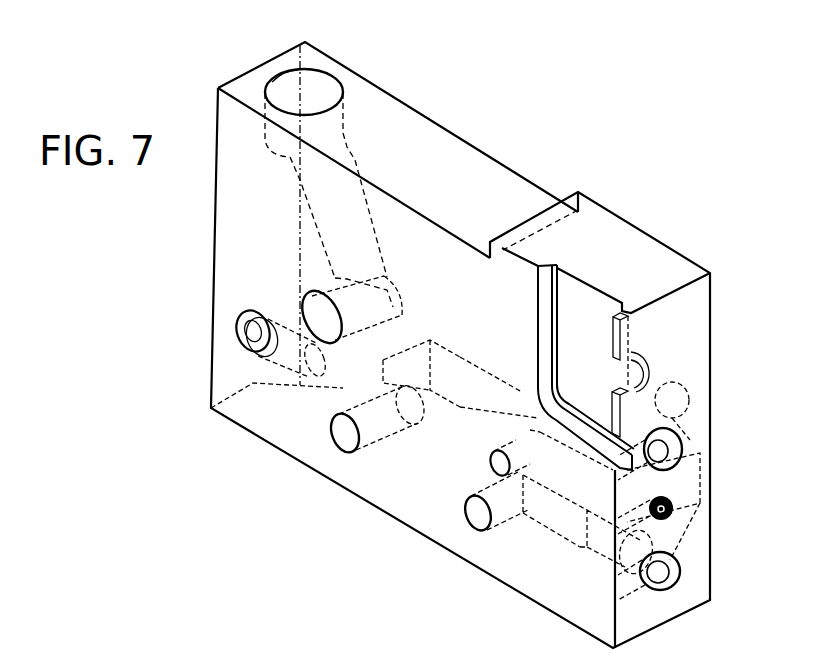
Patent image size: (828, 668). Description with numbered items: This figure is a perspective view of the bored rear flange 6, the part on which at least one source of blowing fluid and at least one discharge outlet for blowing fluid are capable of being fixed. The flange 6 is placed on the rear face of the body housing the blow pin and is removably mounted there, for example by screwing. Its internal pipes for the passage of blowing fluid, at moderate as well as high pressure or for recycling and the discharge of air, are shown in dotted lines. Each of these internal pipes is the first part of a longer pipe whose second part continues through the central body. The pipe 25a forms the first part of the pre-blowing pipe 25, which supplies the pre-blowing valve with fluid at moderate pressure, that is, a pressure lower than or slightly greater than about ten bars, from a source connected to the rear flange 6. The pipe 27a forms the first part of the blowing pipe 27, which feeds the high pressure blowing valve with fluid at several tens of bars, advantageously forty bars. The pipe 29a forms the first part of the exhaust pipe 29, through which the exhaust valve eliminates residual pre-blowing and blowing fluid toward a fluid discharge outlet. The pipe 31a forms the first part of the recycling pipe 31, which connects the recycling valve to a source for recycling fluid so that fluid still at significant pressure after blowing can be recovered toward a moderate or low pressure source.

The rear flange 6 is at (622, 238).
The blowing pipe 27 is at (323, 93).
The pipe 27a is at (340, 147).
The pre-blowing pipe 25 is at (343, 433).
The pipe 25a is at (343, 388).
The exhaust pipe 29 is at (478, 513).
The pipe 29a is at (582, 530).
The recycling pipe 31 is at (498, 420).
The pipe 31a is at (522, 395).